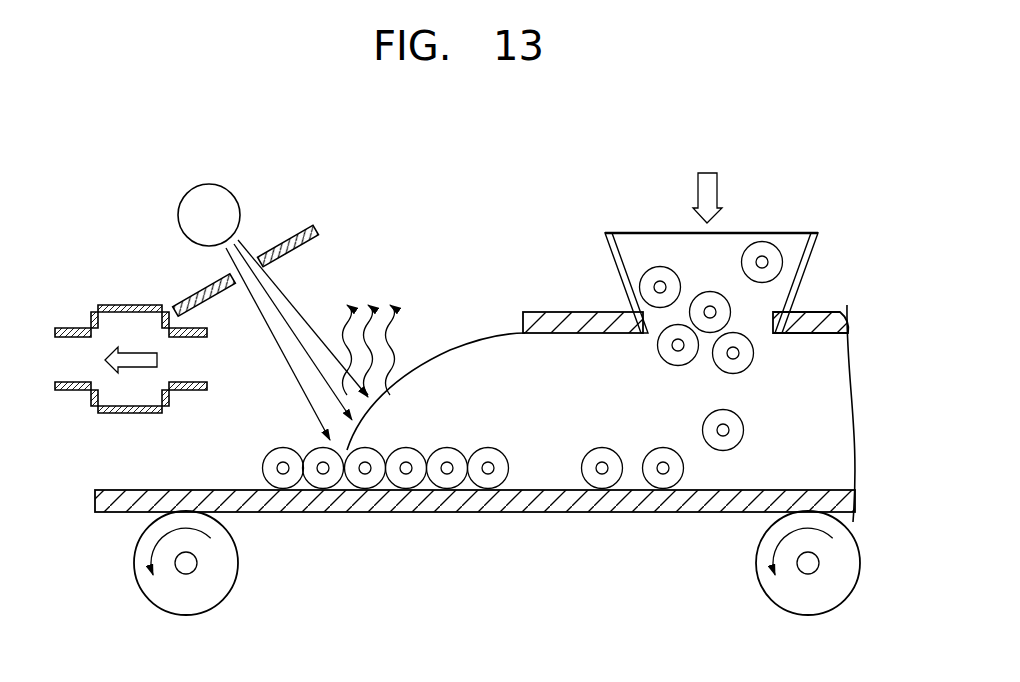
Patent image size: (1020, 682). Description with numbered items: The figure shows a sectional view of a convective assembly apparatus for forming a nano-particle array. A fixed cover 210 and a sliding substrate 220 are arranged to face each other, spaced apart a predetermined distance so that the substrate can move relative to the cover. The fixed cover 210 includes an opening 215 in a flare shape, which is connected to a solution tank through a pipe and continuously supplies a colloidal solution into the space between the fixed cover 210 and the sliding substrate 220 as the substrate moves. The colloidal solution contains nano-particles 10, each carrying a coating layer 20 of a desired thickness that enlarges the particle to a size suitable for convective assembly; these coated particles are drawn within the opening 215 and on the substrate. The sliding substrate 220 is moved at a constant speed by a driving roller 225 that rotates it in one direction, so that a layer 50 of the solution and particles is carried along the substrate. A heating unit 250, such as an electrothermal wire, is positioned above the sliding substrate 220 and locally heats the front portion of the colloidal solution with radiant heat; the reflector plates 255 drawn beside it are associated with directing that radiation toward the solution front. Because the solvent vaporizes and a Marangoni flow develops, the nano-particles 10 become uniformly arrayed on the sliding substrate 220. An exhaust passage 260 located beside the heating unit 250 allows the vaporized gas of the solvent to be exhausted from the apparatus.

The nano-particle 10 is at (762, 262).
The coating layer 20 is at (775, 255).
The particle layer 50 is at (460, 350).
The fixed cover 210 is at (553, 318).
The opening 215 is at (813, 253).
The sliding substrate 220 is at (592, 500).
The driving roller 225 is at (186, 603).
The heating unit 250 is at (211, 195).
The reflector 255 is at (310, 227).
The exhaust passage 260 is at (130, 305).